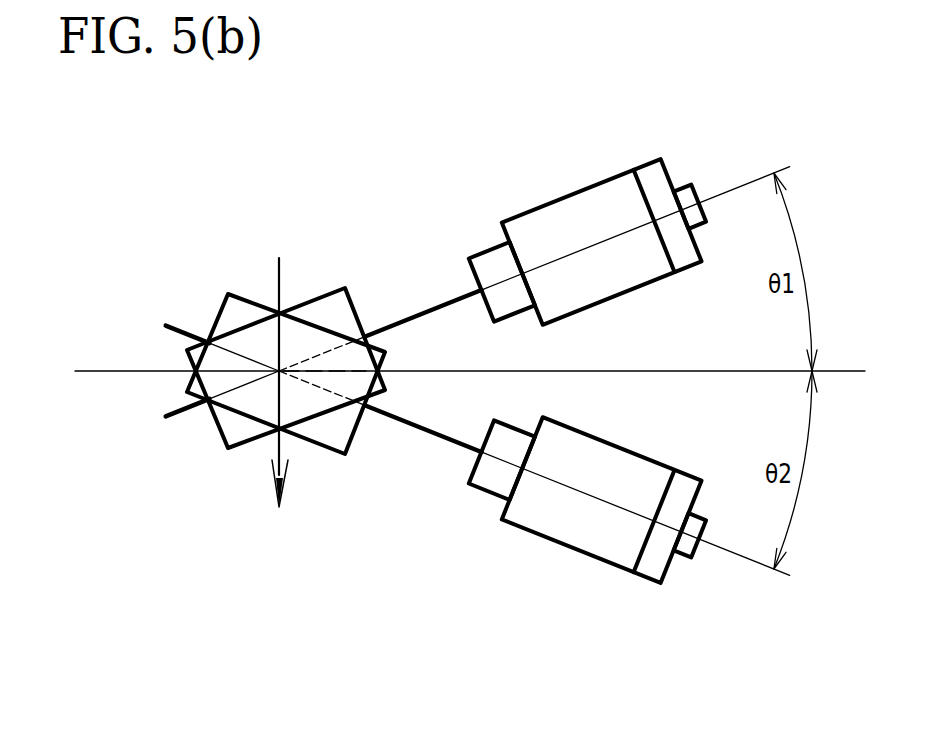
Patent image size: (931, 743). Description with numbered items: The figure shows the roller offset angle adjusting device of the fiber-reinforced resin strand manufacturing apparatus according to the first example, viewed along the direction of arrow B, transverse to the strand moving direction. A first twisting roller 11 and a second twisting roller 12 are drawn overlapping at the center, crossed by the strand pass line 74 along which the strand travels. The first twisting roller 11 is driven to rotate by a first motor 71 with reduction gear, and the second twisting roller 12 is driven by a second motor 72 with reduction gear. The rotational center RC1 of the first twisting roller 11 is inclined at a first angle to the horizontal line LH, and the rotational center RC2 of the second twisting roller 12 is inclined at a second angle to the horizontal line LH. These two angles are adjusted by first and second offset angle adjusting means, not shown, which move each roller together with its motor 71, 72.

The first twisting roller 11 is at (327, 290).
The second twisting roller 12 is at (328, 450).
The first motor with reduction gear 71 is at (558, 200).
The second motor with reduction gear 72 is at (553, 540).
The strand pass line 74 is at (278, 283).
The horizontal line LH is at (115, 370).
The rotational center of the first twisting roller RC1 is at (752, 178).
The rotational center of the second twisting roller RC2 is at (745, 565).